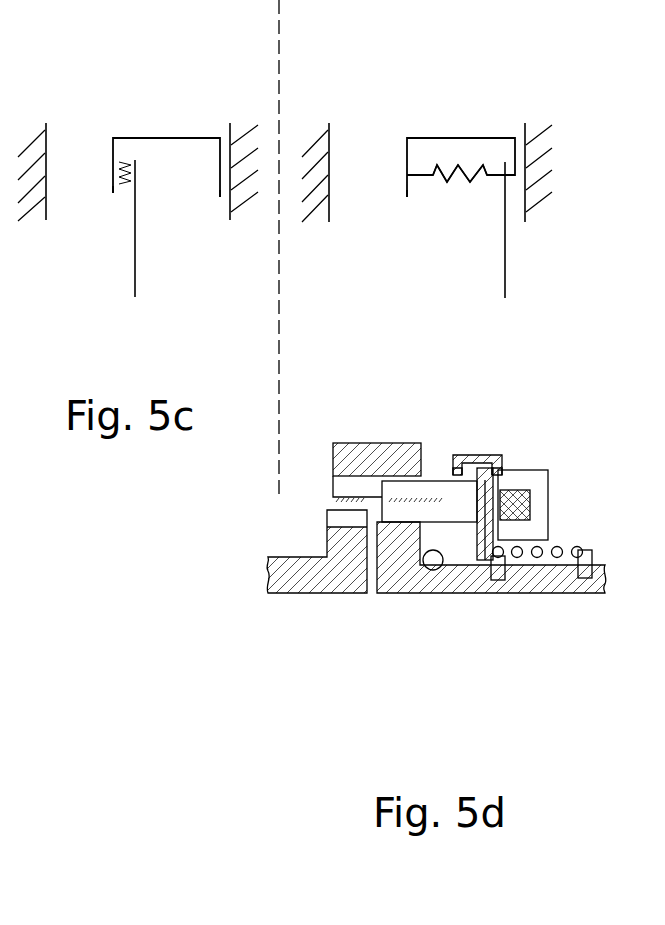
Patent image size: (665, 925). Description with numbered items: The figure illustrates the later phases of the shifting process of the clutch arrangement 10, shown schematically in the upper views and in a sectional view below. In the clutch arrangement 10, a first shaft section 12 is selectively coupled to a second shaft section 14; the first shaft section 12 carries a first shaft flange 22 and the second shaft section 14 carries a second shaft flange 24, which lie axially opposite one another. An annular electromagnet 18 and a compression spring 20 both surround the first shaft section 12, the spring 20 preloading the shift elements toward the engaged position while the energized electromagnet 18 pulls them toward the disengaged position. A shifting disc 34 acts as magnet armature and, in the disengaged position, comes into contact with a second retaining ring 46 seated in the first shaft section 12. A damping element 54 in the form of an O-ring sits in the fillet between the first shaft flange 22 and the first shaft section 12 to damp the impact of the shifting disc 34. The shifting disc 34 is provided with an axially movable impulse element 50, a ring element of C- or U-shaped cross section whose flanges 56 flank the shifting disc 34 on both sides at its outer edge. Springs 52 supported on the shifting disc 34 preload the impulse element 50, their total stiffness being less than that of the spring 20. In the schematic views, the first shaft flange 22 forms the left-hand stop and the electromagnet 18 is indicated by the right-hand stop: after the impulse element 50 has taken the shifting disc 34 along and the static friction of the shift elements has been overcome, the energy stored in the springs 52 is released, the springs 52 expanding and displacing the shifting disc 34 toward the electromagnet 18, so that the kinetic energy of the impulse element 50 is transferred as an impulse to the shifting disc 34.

In FIG. 5D, the clutch arrangement 10 is at (408, 695).
In FIG. 5D, the first shaft section 12 is at (547, 582).
In FIG. 5D, the second shaft section 14 is at (300, 582).
In FIG. 5C, the electromagnet 18 is at (242, 213).
In FIG. 5D, the electromagnet 18 is at (543, 472).
In FIG. 5D, the compression spring 20 is at (577, 550).
In FIG. 5C, the first shaft flange 22 is at (27, 143).
In FIG. 5D, the first shaft flange 22 is at (378, 443).
In FIG. 5D, the second shaft flange 24 is at (325, 548).
In FIG. 5C, the shifting disc 34 is at (133, 270).
In FIG. 5D, the shifting disc 34 is at (478, 563).
In FIG. 5C, the second retaining ring 46 is at (240, 210).
In FIG. 5C, the impulse element 50 is at (188, 138).
In FIG. 5C, the springs 52 is at (125, 162).
In FIG. 5D, the springs 52 is at (470, 455).
In FIG. 5D, the damping element 54 is at (432, 562).
In FIG. 5C, the flanges 56 is at (115, 188).
In FIG. 5D, the flanges 56 is at (453, 468).